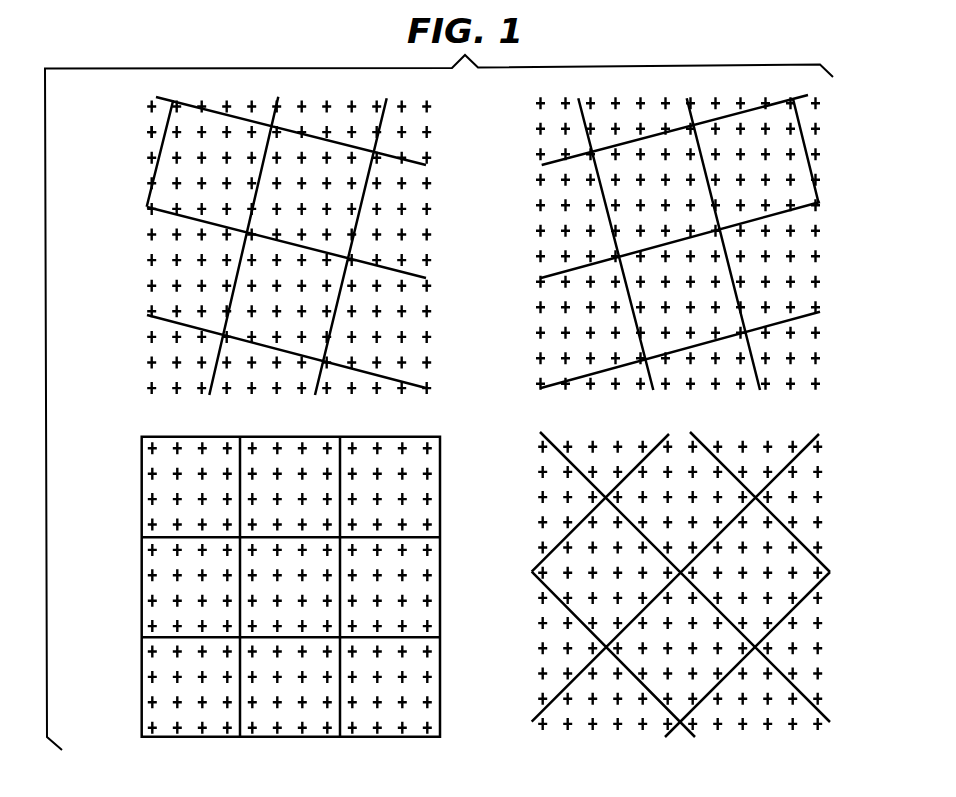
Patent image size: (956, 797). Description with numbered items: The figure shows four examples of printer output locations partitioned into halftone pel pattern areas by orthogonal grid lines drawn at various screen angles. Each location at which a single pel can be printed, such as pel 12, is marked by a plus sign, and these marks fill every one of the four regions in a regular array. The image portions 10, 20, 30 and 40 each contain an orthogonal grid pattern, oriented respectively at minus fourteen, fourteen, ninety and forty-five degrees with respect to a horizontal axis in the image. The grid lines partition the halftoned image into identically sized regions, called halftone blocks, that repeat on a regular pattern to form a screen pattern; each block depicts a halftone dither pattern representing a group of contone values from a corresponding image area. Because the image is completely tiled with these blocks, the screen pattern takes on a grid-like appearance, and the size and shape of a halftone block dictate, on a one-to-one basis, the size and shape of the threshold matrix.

The image portion 10 is at (105, 210).
The pel 12 is at (148, 130).
The image portion 20 is at (846, 207).
The image portion 30 is at (106, 557).
The image portion 40 is at (850, 543).